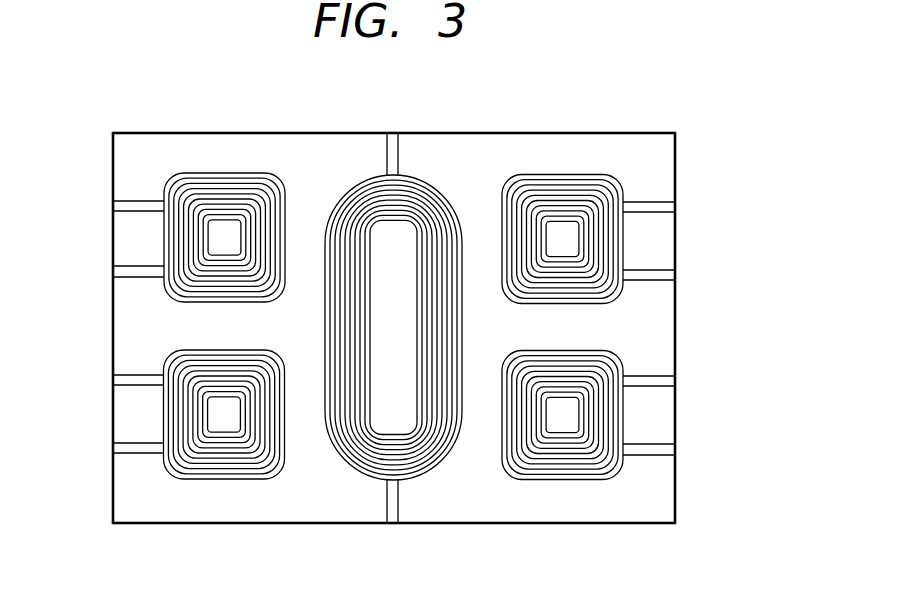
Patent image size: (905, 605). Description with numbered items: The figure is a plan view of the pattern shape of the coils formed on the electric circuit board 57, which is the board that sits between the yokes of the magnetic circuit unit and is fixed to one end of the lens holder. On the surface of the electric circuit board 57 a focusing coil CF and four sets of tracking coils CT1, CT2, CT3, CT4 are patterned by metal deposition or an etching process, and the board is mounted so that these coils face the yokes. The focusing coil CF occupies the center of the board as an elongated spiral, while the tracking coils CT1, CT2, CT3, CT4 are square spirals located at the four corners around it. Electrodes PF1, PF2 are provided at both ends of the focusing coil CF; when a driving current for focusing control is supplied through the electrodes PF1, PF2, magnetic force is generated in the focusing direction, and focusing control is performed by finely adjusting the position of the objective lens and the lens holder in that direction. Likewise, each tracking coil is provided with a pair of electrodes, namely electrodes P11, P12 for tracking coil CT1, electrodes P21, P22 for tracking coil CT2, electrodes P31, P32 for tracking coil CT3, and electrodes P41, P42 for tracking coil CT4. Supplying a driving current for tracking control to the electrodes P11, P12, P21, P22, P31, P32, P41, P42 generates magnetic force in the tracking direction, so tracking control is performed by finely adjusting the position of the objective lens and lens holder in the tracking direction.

The electric circuit board 57 is at (617, 523).
The tracking coil CT1 is at (219, 173).
The tracking coil CT2 is at (226, 463).
The tracking coil CT3 is at (566, 178).
The tracking coil CT4 is at (560, 463).
The focusing coil CF is at (363, 472).
The electrode PF1 is at (385, 152).
The electrode PF2 is at (398, 503).
The electrode P11 is at (126, 211).
The electrode P12 is at (126, 278).
The electrode P21 is at (125, 385).
The electrode P22 is at (125, 453).
The electrode P31 is at (663, 211).
The electrode P32 is at (663, 279).
The electrode P41 is at (663, 386).
The electrode P42 is at (663, 455).